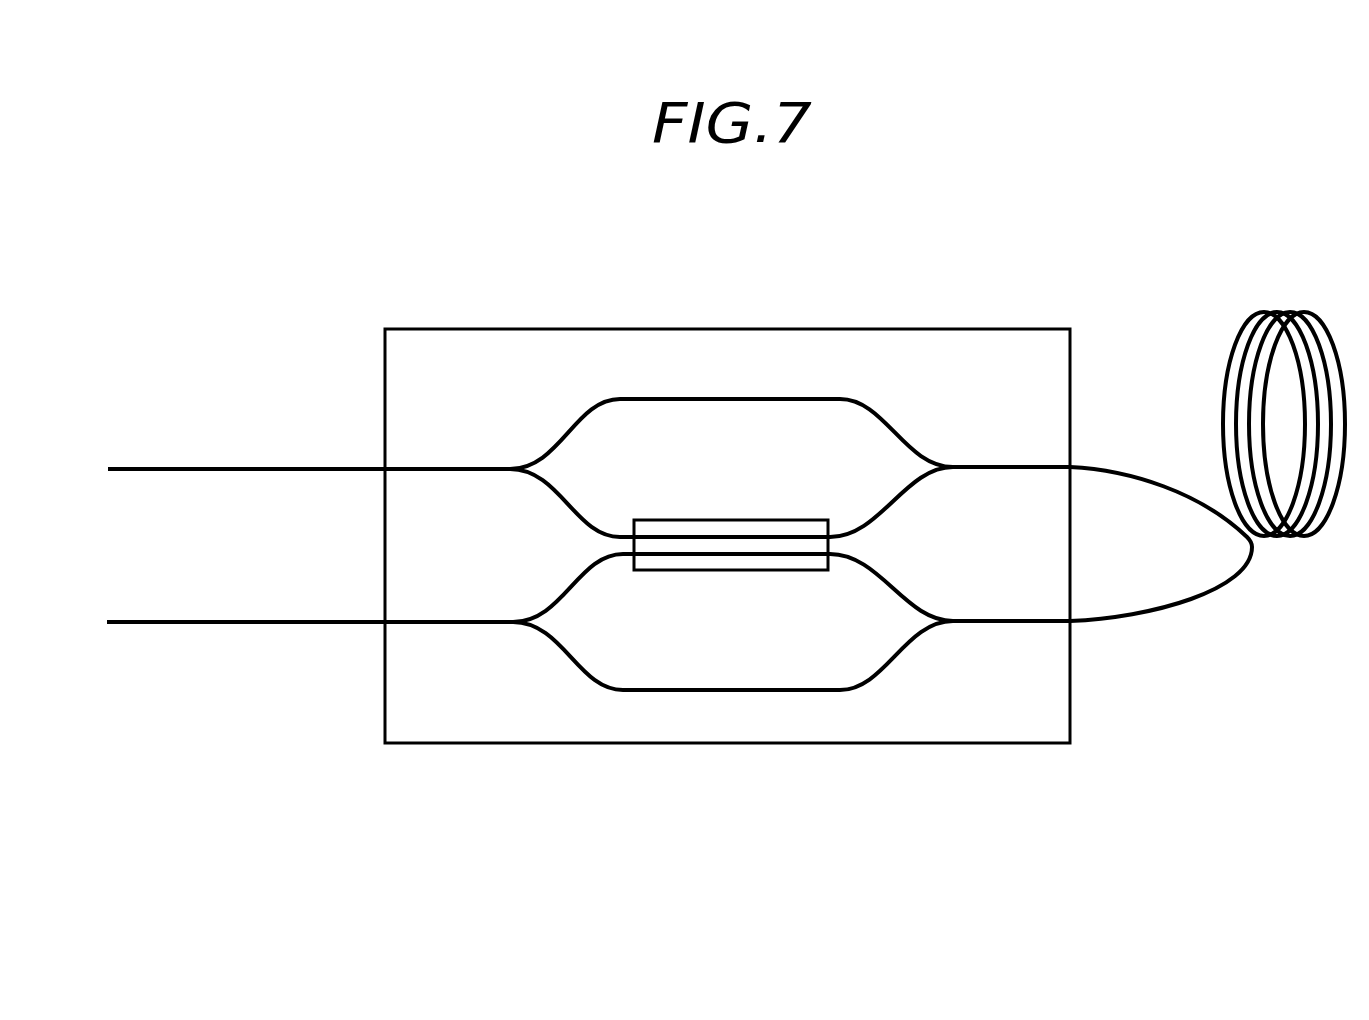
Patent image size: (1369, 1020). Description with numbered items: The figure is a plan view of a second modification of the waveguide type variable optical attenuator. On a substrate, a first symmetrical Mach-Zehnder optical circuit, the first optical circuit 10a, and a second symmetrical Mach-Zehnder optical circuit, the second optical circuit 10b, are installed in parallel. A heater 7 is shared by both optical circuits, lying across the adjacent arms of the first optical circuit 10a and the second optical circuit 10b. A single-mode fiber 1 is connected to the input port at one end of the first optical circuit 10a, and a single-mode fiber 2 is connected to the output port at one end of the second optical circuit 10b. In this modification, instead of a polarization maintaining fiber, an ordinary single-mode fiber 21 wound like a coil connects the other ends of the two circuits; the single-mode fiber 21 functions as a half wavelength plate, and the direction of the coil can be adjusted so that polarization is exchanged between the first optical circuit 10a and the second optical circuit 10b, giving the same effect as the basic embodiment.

The single-mode fiber 1 is at (205, 468).
The single-mode fiber 2 is at (183, 625).
The first optical circuit 10a is at (538, 428).
The second optical circuit 10b is at (532, 590).
The heater 7 is at (828, 565).
The single-mode fiber 21 is at (1145, 623).